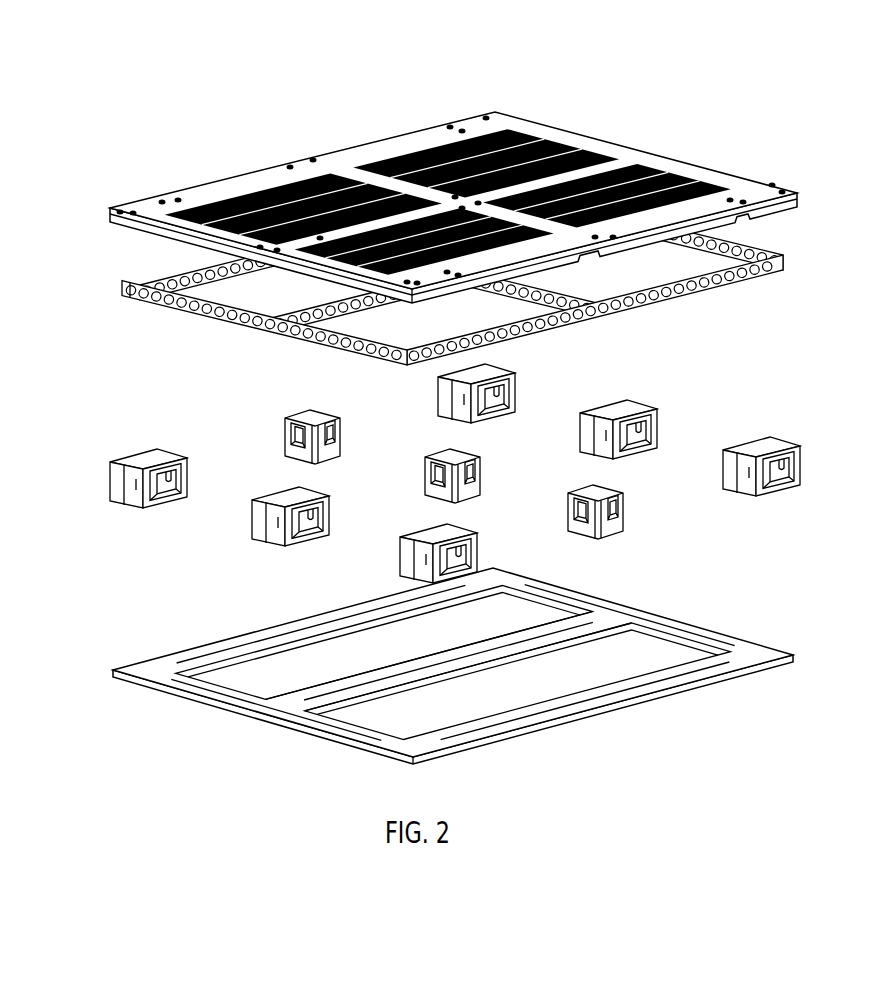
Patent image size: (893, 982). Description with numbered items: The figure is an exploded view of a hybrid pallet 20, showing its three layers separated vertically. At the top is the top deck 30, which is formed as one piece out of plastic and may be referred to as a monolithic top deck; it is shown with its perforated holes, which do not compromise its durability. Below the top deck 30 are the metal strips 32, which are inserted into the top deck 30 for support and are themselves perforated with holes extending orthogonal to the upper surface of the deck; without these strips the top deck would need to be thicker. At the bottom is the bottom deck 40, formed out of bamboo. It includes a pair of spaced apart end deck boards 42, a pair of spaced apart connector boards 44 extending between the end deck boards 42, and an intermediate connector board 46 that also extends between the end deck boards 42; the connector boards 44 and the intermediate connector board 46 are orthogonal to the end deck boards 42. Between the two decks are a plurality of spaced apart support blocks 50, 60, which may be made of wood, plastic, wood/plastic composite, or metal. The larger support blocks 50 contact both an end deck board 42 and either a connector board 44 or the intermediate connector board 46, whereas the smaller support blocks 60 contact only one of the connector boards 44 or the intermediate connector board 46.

The hybrid pallet 20 is at (110, 96).
The top deck 30 is at (327, 158).
The metal strips 32 is at (788, 258).
The bottom deck 40 is at (453, 673).
The end deck boards 42 is at (678, 630).
The connector boards 44 is at (268, 630).
The intermediate connector board 46 is at (443, 668).
The support blocks 50 is at (775, 443).
The support blocks 60 is at (603, 489).